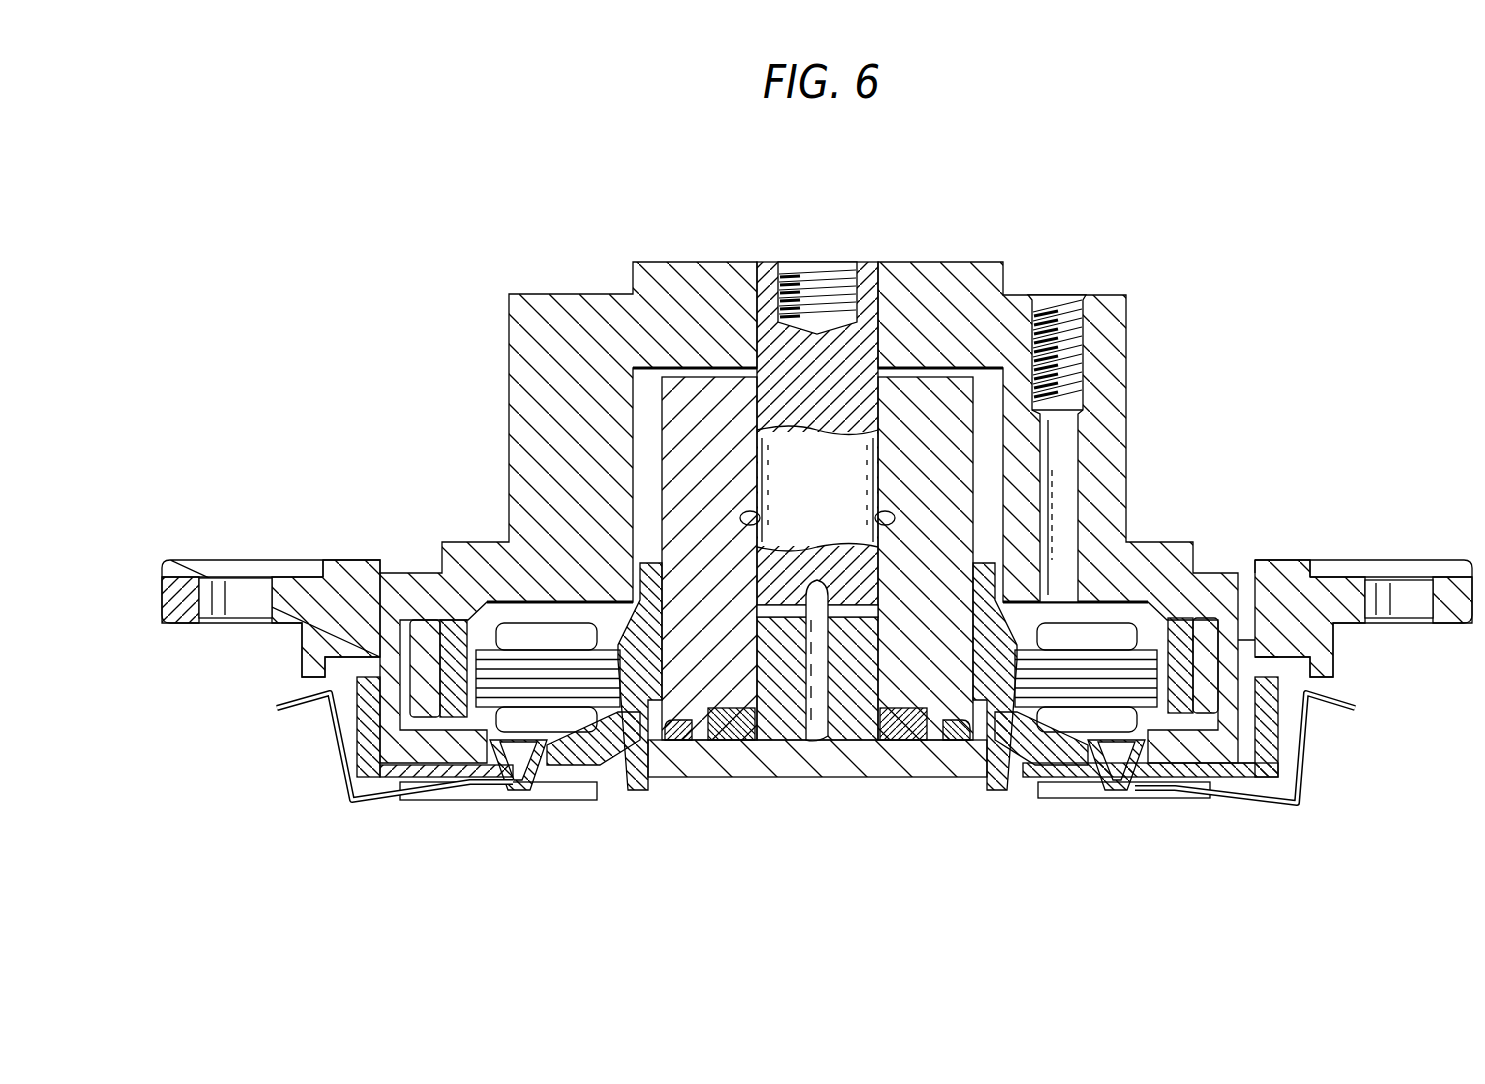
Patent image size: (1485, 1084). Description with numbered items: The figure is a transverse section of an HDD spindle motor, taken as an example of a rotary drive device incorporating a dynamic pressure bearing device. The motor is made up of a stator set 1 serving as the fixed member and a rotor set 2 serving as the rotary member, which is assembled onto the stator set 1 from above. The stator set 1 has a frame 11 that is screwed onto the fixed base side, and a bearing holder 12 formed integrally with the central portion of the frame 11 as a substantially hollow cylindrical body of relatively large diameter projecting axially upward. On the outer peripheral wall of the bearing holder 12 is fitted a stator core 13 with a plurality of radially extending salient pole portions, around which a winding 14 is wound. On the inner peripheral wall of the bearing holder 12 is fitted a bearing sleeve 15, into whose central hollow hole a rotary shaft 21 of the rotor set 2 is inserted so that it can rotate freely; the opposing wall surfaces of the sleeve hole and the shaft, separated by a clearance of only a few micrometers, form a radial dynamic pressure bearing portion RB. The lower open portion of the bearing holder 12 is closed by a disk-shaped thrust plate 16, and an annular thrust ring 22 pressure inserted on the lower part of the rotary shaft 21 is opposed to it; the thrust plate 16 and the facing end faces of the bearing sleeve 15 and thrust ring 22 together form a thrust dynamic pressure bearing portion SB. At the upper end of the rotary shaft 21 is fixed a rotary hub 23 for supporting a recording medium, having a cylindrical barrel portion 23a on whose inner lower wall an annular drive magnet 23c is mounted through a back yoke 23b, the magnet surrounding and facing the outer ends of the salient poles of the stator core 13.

The stator set 1 is at (1345, 766).
The rotor set 2 is at (1160, 402).
The frame 11 is at (330, 763).
The bearing holder 12 is at (633, 702).
The stator core 13 is at (1062, 680).
The winding 14 is at (1097, 720).
The bearing sleeve 15 is at (716, 415).
The thrust plate 16 is at (802, 768).
The rotary shaft 21 is at (848, 365).
The thrust ring 22 is at (733, 740).
The rotary hub 23 is at (978, 290).
The barrel portion 23a is at (1120, 460).
The back yoke 23b is at (1210, 670).
The drive magnet 23c is at (1190, 632).
The radial dynamic pressure bearing portion RB is at (817, 488).
The thrust dynamic pressure bearing portion SB is at (898, 742).